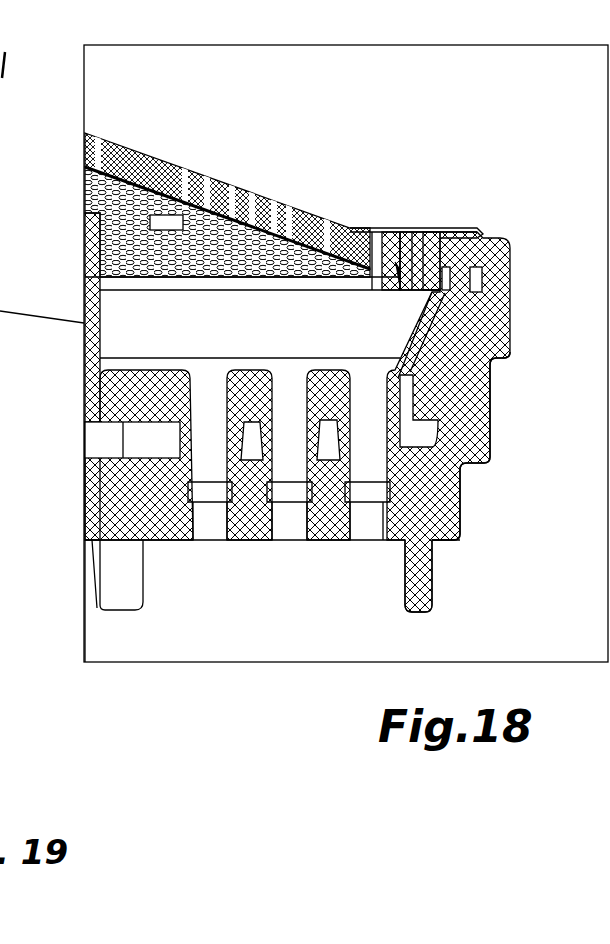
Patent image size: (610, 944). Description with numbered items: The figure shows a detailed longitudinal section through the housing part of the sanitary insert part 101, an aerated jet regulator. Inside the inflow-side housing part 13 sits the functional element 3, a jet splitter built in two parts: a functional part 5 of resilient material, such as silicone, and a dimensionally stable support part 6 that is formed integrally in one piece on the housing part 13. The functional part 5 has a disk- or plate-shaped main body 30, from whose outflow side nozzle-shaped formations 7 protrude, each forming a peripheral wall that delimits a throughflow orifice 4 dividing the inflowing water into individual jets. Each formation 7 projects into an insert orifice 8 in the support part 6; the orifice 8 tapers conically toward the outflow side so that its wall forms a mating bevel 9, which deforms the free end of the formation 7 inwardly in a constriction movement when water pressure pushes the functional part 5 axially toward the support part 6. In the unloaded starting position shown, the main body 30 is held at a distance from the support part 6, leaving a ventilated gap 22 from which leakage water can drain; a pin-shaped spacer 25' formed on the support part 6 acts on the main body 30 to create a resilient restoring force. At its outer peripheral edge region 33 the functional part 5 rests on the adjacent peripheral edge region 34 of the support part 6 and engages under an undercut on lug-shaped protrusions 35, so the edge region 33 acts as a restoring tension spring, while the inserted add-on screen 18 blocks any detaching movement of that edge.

The sanitary insert part 101 is at (452, 150).
The add-on screen 18 is at (158, 157).
The spacer 25' is at (191, 227).
The outer peripheral edge region 33 is at (490, 246).
The peripheral edge region 34 is at (522, 273).
The lug-shaped protrusion 35 is at (508, 283).
The functional part 5 is at (512, 335).
The inflow-side housing part 13 is at (480, 384).
The functional element 3 is at (493, 445).
The main body 30 is at (138, 390).
The throughflow orifice 4 is at (204, 352).
The gap 22 is at (147, 443).
The nozzle-shaped formation 7 is at (248, 470).
The insert orifice 8 is at (361, 546).
The support part 6 is at (180, 485).
The mating bevel 9 is at (412, 480).